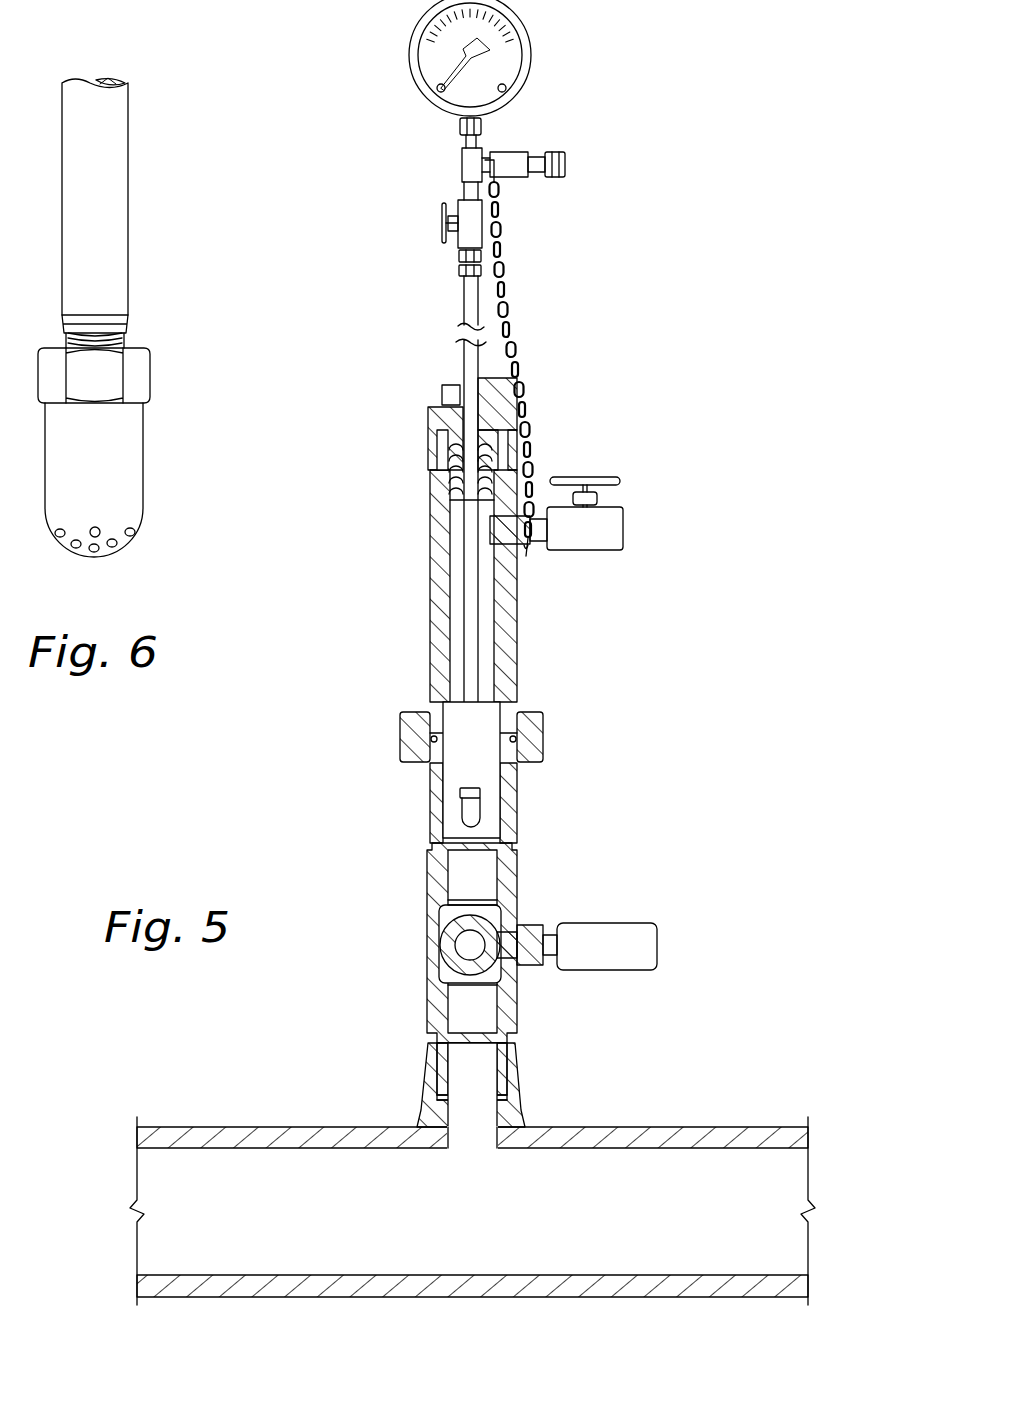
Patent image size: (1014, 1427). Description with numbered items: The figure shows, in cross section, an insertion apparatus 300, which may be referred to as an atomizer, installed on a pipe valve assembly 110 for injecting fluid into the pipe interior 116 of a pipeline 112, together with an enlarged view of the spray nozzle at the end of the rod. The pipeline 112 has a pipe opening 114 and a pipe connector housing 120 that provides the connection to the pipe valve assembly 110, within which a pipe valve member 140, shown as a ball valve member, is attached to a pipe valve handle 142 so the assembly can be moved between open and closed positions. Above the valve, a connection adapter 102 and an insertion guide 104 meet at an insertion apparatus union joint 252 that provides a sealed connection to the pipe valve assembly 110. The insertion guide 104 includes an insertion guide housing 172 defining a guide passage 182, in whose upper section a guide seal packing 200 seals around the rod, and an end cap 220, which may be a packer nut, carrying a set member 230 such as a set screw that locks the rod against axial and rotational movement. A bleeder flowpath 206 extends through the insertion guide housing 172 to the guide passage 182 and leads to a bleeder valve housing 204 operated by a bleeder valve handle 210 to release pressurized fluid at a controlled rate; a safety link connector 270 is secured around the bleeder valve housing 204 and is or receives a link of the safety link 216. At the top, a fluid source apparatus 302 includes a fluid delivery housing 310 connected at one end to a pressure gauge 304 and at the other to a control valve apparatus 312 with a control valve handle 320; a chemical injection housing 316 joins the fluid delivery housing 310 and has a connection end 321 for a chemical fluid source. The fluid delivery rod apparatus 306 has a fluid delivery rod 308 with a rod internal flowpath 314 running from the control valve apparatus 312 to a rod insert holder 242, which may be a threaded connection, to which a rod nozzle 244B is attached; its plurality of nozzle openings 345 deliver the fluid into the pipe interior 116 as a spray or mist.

In FIG. 5, the insertion apparatus 300 is at (702, 76).
In FIG. 5, the fluid source apparatus 302 is at (561, 160).
In FIG. 5, the pressure gauge 304 is at (532, 48).
In FIG. 5, the fluid delivery rod apparatus 306 is at (460, 310).
In FIG. 6, the fluid delivery rod 308 is at (130, 182).
In FIG. 5, the fluid delivery rod 308 is at (462, 355).
In FIG. 5, the fluid delivery housing 310 is at (461, 163).
In FIG. 5, the control valve apparatus 312 is at (412, 247).
In FIG. 6, the rod internal flowpath 314 is at (108, 76).
In FIG. 5, the chemical injection housing 316 is at (518, 180).
In FIG. 5, the control valve handle 320 is at (441, 210).
In FIG. 5, the connection end 321 is at (566, 163).
In FIG. 5, the safety link 216 is at (522, 348).
In FIG. 5, the set member 230 is at (441, 393).
In FIG. 5, the end cap 220 is at (427, 425).
In FIG. 5, the guide seal packing 200 is at (446, 455).
In FIG. 5, the bleeder valve handle 210 is at (612, 478).
In FIG. 5, the bleeder flowpath 206 is at (489, 530).
In FIG. 5, the safety link connector 270 is at (530, 548).
In FIG. 5, the bleeder valve housing 204 is at (616, 515).
In FIG. 5, the guide passage 182 is at (454, 635).
In FIG. 5, the insertion guide housing 172 is at (521, 640).
In FIG. 5, the insertion guide 104 is at (492, 563).
In FIG. 5, the insertion apparatus union joint 252 is at (372, 752).
In FIG. 6, the rod nozzle 244B is at (136, 475).
In FIG. 5, the rod nozzle 244B is at (481, 808).
In FIG. 6, the rod insert holder 242 is at (125, 343).
In FIG. 6, the nozzle openings 345 is at (108, 551).
In FIG. 5, the connection adapter 102 is at (450, 772).
In FIG. 5, the pipe valve assembly 110 is at (513, 943).
In FIG. 5, the pipe valve member 140 is at (452, 945).
In FIG. 5, the pipe valve handle 142 is at (660, 945).
In FIG. 5, the pipe connector housing 120 is at (524, 1087).
In FIG. 5, the pipeline 112 is at (472, 1187).
In FIG. 5, the pipe opening 114 is at (446, 1168).
In FIG. 5, the pipe interior 116 is at (700, 1227).